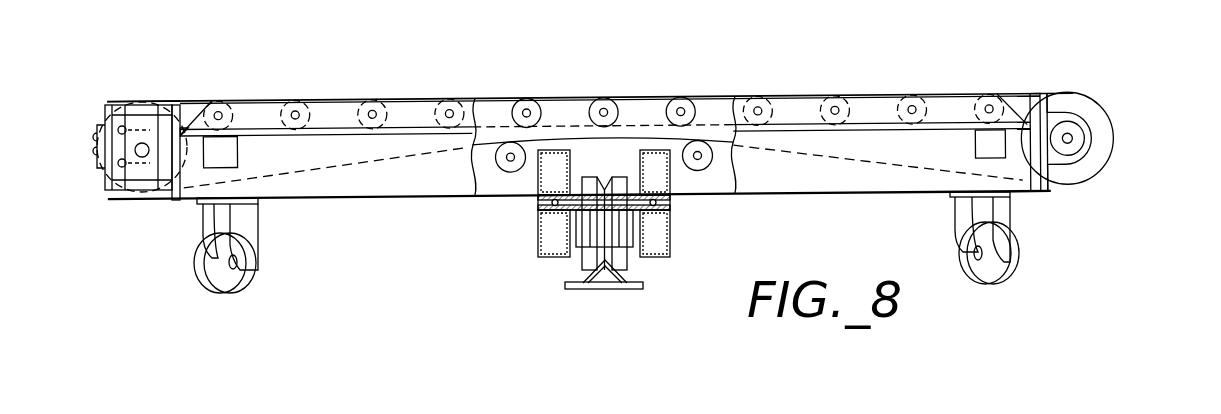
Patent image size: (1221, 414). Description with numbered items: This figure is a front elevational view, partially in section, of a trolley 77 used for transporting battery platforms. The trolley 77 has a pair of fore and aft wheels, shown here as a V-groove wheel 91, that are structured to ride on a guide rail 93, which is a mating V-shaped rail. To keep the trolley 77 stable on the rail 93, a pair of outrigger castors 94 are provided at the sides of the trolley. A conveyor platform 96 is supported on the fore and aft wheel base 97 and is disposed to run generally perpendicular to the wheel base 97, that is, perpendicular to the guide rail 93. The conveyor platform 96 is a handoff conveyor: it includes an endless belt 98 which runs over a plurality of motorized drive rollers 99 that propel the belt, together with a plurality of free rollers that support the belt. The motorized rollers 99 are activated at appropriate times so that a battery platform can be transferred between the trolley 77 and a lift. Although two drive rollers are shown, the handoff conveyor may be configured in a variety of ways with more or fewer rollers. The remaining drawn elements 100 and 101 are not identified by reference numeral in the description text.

The conveyor section 77 is at (133, 82).
The drive motor 91 is at (627, 262).
The motor base 93 is at (587, 274).
The casters 94 is at (197, 263).
The conveyor frame 96 is at (841, 202).
The motor mounting brackets 97 is at (670, 228).
The end bracket 98 is at (197, 101).
The end roller 99 is at (1102, 113).
The rollers 100 is at (282, 100).
The drive shaft 101 is at (531, 207).